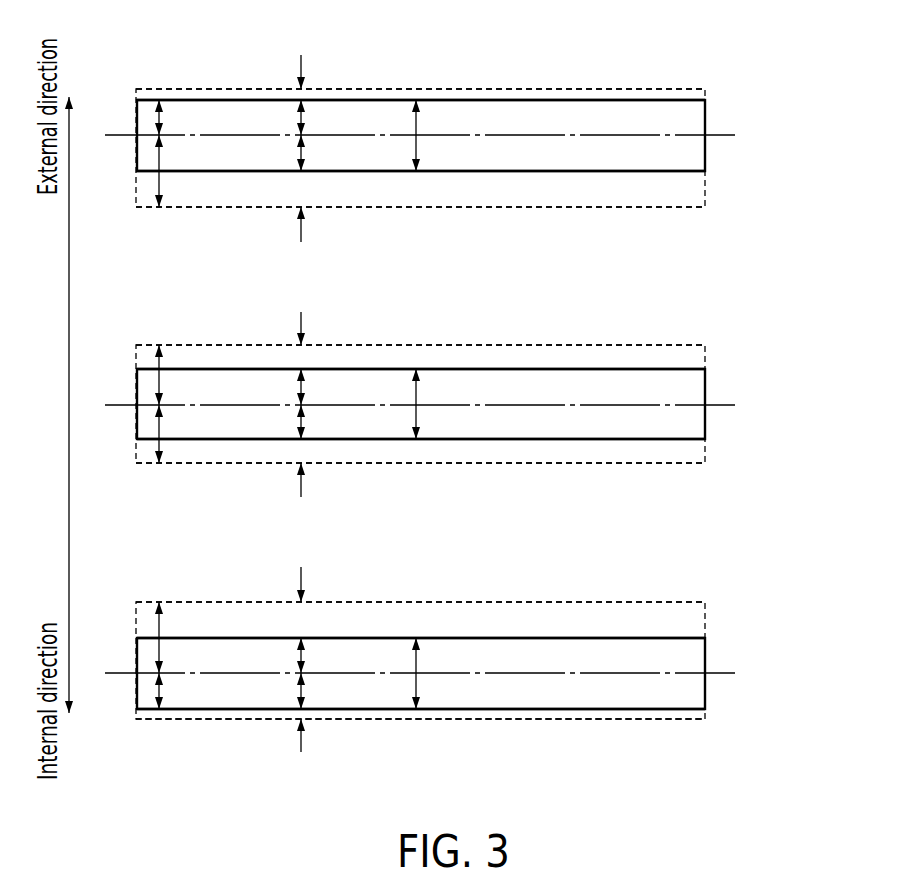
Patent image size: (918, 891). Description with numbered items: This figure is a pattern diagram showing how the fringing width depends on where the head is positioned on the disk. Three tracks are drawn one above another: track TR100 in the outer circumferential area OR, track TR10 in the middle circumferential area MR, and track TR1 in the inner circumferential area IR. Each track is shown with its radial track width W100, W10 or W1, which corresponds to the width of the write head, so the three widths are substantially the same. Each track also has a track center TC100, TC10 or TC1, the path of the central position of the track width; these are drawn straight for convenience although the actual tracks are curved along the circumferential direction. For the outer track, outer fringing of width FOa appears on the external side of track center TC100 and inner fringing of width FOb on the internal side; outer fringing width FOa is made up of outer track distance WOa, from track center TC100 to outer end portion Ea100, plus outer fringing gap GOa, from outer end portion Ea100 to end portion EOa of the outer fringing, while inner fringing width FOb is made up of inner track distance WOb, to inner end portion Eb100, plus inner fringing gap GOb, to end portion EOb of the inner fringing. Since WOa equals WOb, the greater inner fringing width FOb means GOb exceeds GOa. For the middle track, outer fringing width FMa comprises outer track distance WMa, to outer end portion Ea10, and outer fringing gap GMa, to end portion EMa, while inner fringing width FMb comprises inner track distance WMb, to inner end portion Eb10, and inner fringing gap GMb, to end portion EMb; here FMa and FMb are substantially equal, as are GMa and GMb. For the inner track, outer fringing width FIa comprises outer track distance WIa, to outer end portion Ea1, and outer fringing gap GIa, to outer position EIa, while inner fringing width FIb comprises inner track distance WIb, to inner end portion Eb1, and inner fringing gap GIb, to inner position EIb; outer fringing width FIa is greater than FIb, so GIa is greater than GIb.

The outer circumferential area OR is at (752, 63).
The track TR100 is at (693, 117).
The track center TC100 is at (720, 135).
The outer end portion Ea100 is at (567, 100).
The inner end portion Eb100 is at (567, 171).
The end portion of outer fringing EOa is at (670, 89).
The end portion of inner fringing EOb is at (658, 207).
The outer fringing width FOa is at (162, 115).
The inner fringing width FOb is at (165, 177).
The outer fringing gap GOa is at (302, 92).
The inner fringing gap GOb is at (302, 190).
The outer track distance WOa is at (303, 118).
The inner track distance WOb is at (303, 150).
The track width W100 is at (418, 120).
The middle circumferential area MR is at (755, 333).
The track TR10 is at (693, 387).
The track center TC10 is at (720, 405).
The outer end portion Ea10 is at (567, 369).
The inner end portion Eb10 is at (567, 439).
The end portion of outer fringing EMa is at (670, 345).
The end portion of inner fringing EMb is at (658, 463).
The outer fringing width FMa is at (162, 380).
The inner fringing width FMb is at (163, 428).
The outer fringing gap GMa is at (302, 360).
The inner fringing gap GMb is at (302, 450).
The outer track distance WMa is at (303, 388).
The inner track distance WMb is at (303, 427).
The track width W10 is at (418, 390).
The inner circumferential area IR is at (755, 590).
The track TR1 is at (693, 655).
The track center TC1 is at (720, 673).
The outer end portion Ea1 is at (567, 638).
The inner end portion Eb1 is at (567, 709).
The end portion of outer fringing EIa is at (670, 602).
The end portion of inner fringing EIb is at (658, 719).
The outer fringing width FIa is at (162, 630).
The inner fringing width FIb is at (163, 680).
The outer fringing gap GIa is at (302, 620).
The inner fringing gap GIb is at (302, 715).
The outer track distance WIa is at (303, 658).
The inner track distance WIb is at (303, 697).
The track width W1 is at (418, 660).